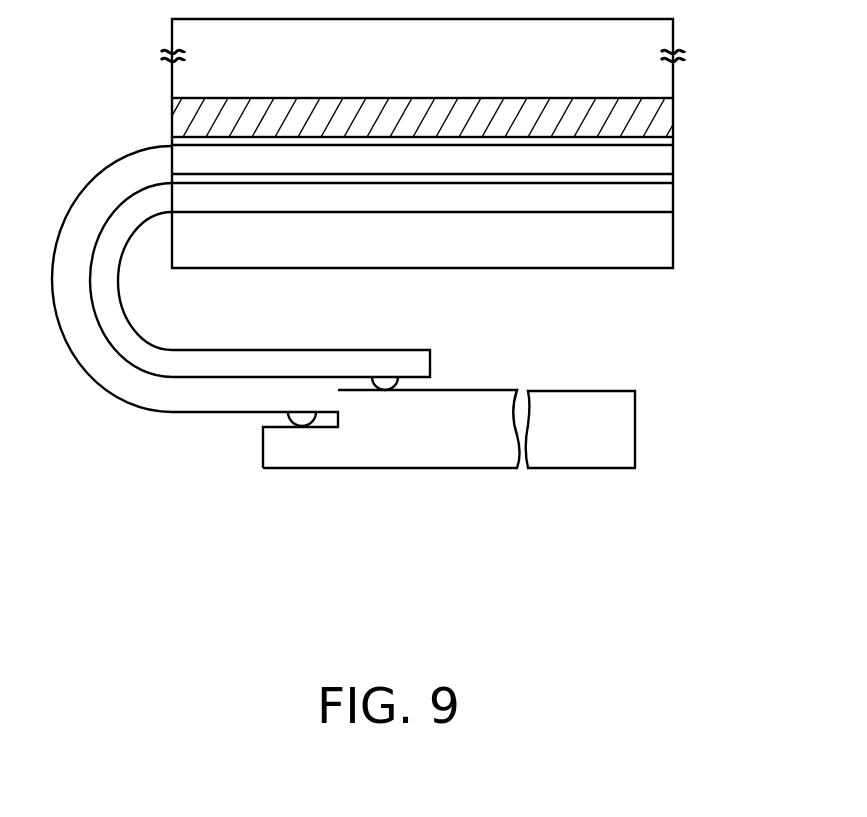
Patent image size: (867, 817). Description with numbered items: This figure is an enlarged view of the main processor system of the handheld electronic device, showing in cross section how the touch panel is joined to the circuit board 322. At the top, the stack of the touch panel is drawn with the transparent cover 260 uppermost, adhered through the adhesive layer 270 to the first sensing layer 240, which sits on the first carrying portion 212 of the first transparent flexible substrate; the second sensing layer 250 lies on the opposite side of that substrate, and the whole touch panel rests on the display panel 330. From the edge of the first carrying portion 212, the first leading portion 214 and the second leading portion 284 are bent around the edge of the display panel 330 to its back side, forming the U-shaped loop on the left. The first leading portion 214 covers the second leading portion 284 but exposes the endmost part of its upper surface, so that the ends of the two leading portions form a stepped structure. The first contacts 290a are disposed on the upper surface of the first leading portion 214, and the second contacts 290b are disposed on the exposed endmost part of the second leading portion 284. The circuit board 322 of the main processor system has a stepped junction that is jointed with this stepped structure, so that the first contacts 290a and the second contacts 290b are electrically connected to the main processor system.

The transparent cover 260 is at (673, 35).
The adhesive layer 270 is at (660, 118).
The first sensing layer 240 is at (177, 143).
The first carrying portion 212 is at (660, 160).
The second sensing layer 250 is at (177, 180).
The first leading portion 214 is at (660, 198).
The display panel 330 is at (660, 250).
The second leading portion 284 is at (423, 370).
The first contacts 290a is at (302, 418).
The second contacts 290b is at (385, 383).
The circuit board 322 is at (627, 433).